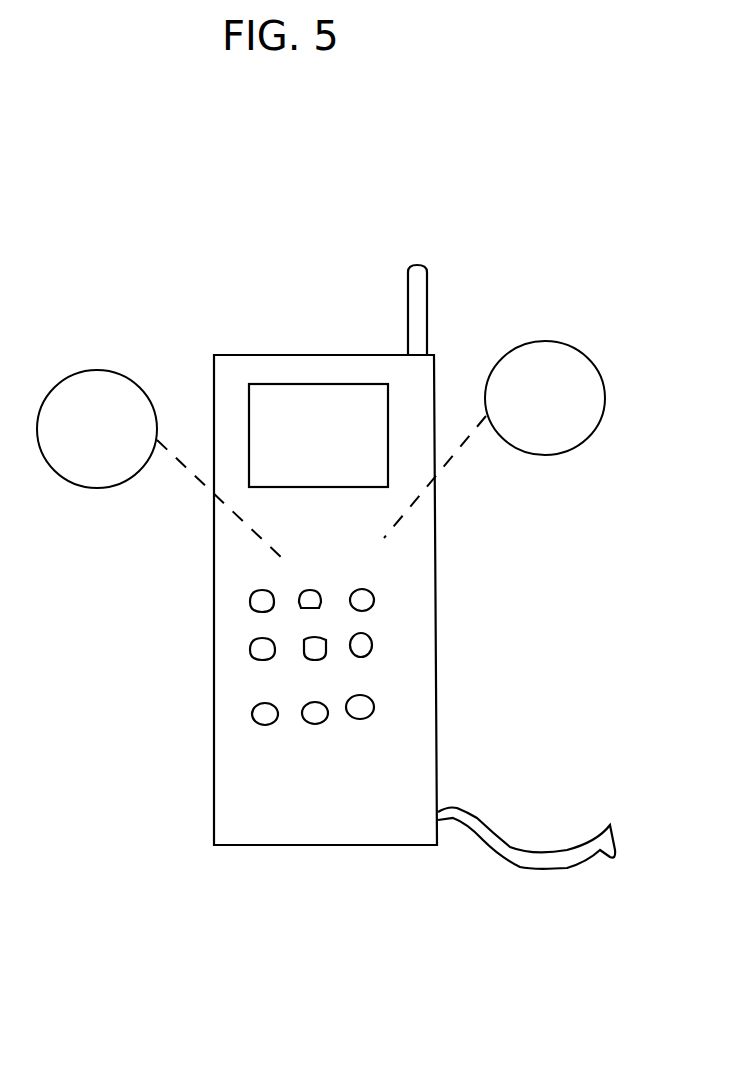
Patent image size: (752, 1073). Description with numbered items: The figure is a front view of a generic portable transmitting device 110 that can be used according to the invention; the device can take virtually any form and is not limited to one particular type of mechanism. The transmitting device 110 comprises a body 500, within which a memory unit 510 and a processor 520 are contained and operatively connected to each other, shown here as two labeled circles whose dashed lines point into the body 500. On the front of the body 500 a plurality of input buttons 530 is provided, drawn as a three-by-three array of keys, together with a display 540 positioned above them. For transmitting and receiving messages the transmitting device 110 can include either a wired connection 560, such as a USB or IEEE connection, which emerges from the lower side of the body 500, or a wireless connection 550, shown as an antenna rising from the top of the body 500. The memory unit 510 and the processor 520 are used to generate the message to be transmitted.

The transmitting device 110 is at (216, 303).
The body 500 is at (326, 353).
The memory unit 510 is at (494, 439).
The processor 520 is at (159, 464).
The input buttons 530 is at (376, 594).
The display 540 is at (374, 408).
The wireless connection 550 is at (427, 268).
The wired connection 560 is at (478, 818).